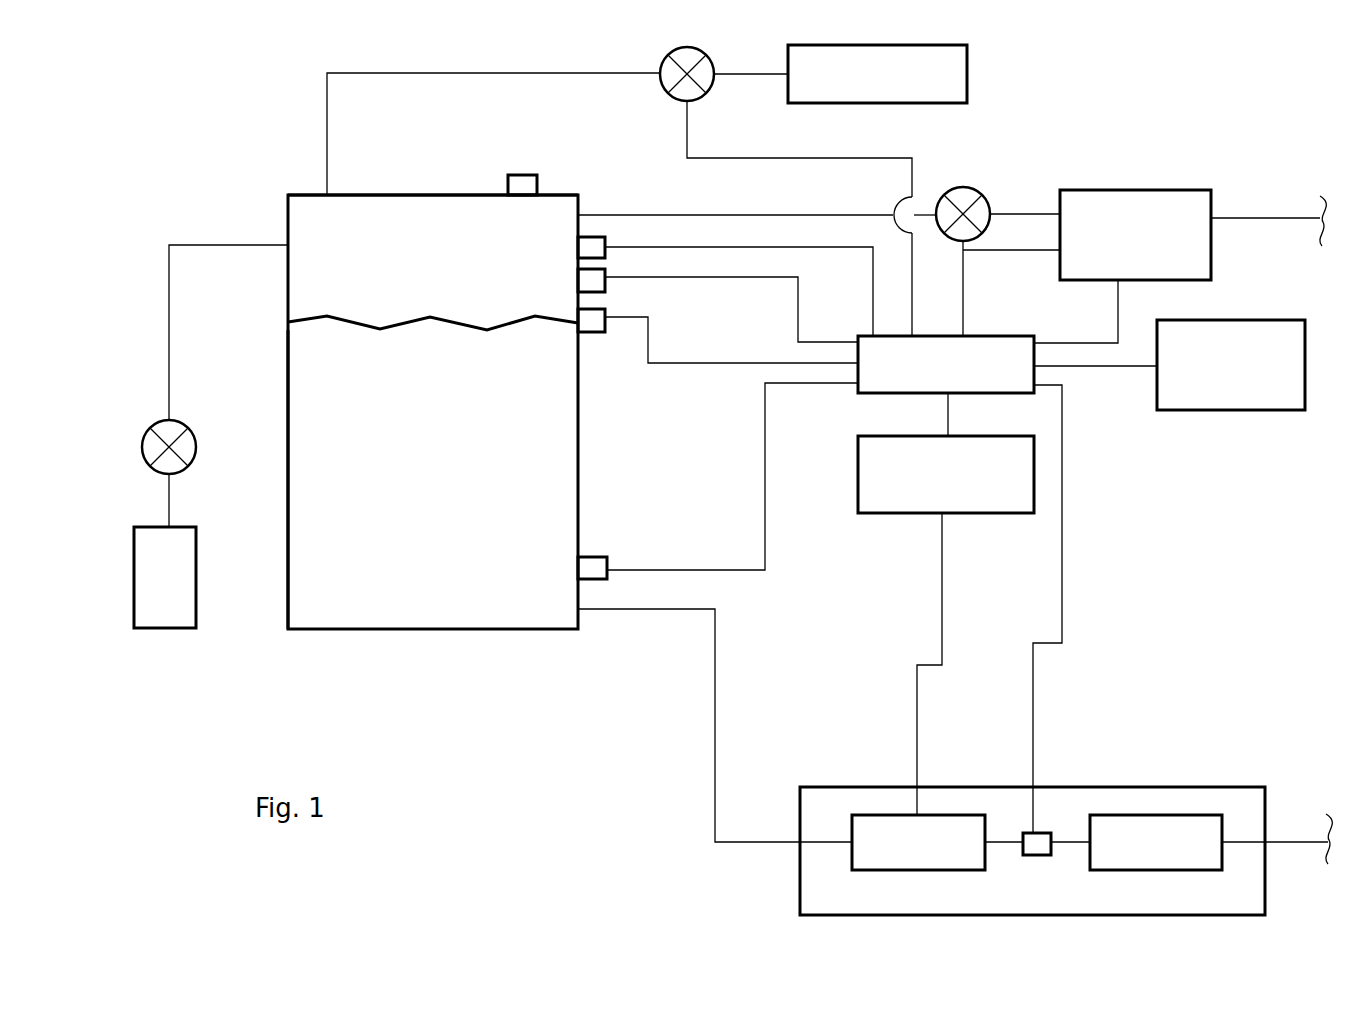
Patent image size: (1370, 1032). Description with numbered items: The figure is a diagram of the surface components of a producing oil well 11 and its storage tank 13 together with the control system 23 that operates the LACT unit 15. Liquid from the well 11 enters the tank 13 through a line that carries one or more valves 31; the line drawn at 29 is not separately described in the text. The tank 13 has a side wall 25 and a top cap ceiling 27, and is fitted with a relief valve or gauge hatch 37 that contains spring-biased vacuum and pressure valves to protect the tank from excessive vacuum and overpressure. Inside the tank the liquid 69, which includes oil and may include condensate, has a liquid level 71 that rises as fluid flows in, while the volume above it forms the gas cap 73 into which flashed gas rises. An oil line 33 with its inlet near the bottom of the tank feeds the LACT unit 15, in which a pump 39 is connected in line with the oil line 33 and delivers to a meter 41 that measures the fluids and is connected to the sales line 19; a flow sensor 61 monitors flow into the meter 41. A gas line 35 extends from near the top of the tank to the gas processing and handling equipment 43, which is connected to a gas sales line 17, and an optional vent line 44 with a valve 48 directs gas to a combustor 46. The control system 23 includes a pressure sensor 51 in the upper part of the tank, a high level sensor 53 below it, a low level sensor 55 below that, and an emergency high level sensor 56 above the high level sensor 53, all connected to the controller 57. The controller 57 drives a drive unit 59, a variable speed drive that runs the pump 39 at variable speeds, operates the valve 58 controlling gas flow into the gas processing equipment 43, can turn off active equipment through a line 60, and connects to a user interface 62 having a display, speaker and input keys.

The producing oil well 11 is at (196, 608).
The storage tank 13 is at (405, 629).
The LACT unit 15 is at (1078, 787).
The gas sales line 17 is at (1265, 213).
The sales line 19 is at (1285, 840).
The control system 23 is at (1082, 426).
The side wall 25 is at (288, 398).
The top cap ceiling 27 is at (300, 193).
The inlet line 29 is at (180, 243).
The valve 31 is at (186, 461).
The oil line 33 is at (713, 776).
The gas line 35 is at (785, 213).
The relief valve or gauge hatch 37 is at (508, 176).
The pump 39 is at (872, 815).
The meter 41 is at (1172, 813).
The gas processing and handling equipment 43 is at (1212, 262).
The vent line 44 is at (325, 92).
The combustor 46 is at (970, 72).
The valve 48 is at (655, 86).
The pressure sensor 51 is at (594, 236).
The high level sensor 53 is at (592, 333).
The low level sensor 55 is at (596, 556).
The emergency high level sensor 56 is at (605, 291).
The controller 57 is at (989, 335).
The valve 58 is at (972, 196).
The drive unit 59 is at (870, 516).
The line 60 is at (1112, 330).
The flow sensor 61 is at (1022, 833).
The user interface 62 is at (1248, 411).
The liquid 69 is at (422, 483).
The liquid level 71 is at (312, 320).
The gas cap 73 is at (420, 258).